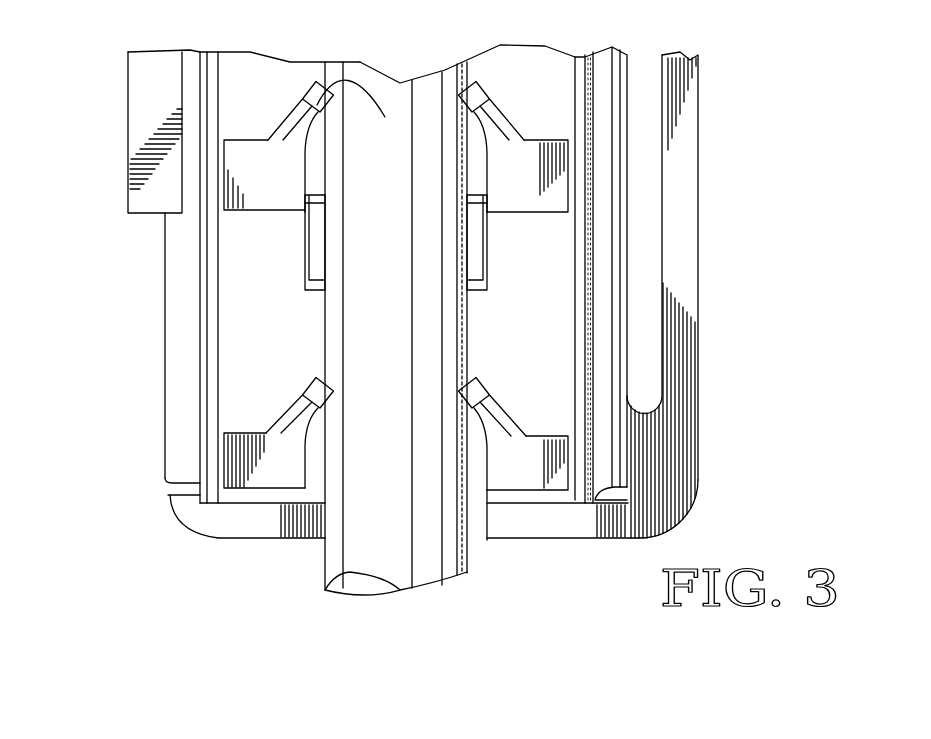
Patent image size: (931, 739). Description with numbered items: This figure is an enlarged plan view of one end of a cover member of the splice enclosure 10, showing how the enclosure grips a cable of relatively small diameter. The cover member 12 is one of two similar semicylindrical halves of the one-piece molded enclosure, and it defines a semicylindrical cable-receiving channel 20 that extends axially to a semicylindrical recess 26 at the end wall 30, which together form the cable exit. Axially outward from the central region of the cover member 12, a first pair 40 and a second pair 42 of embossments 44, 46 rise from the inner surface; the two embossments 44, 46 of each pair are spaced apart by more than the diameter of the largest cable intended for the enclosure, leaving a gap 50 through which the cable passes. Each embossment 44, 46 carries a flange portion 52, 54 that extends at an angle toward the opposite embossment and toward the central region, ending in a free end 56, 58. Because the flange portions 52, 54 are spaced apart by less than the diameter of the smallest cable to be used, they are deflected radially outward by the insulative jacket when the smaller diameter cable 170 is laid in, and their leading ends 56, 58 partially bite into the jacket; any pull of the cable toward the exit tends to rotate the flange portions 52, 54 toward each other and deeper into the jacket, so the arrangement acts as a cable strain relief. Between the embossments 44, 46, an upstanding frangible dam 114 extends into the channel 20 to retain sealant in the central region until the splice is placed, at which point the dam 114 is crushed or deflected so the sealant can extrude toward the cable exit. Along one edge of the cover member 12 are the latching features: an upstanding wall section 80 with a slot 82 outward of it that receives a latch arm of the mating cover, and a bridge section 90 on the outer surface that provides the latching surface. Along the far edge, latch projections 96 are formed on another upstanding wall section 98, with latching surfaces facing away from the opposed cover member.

The splice enclosure 10 is at (116, 434).
The cover member 12 is at (168, 495).
The cable-receiving channel 20 is at (317, 476).
The semicylindrical recess 26 is at (470, 538).
The end wall 30 is at (563, 542).
The first pair of embossments 40 is at (293, 232).
The second pair of embossments 42 is at (237, 423).
The embossment 44 is at (238, 157).
The embossment 46 is at (560, 148).
The gap 50 is at (425, 100).
The flange portion 52 is at (318, 97).
The flange portion 54 is at (490, 97).
The free end 56 is at (354, 113).
The free end 58 is at (465, 85).
The upstanding wall section 80 is at (605, 228).
The slot 82 is at (665, 208).
The bridge section 90 is at (680, 288).
The latch projection 96 is at (138, 77).
The upstanding wall section 98 is at (190, 302).
The frangible dam 114 is at (477, 232).
The smaller diameter cable 170 is at (368, 64).